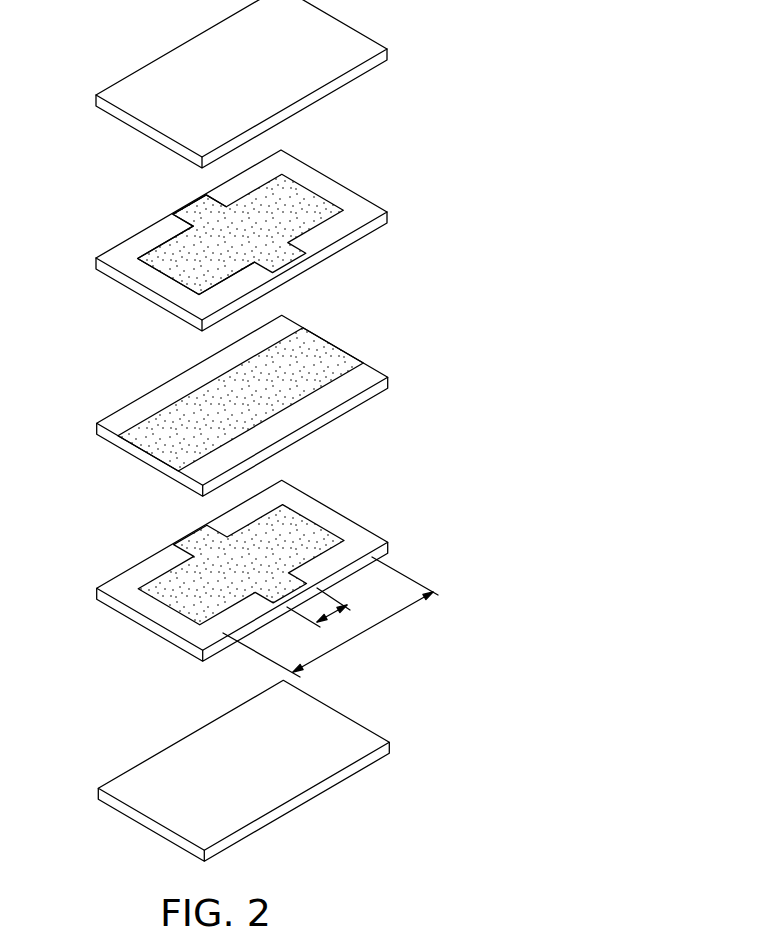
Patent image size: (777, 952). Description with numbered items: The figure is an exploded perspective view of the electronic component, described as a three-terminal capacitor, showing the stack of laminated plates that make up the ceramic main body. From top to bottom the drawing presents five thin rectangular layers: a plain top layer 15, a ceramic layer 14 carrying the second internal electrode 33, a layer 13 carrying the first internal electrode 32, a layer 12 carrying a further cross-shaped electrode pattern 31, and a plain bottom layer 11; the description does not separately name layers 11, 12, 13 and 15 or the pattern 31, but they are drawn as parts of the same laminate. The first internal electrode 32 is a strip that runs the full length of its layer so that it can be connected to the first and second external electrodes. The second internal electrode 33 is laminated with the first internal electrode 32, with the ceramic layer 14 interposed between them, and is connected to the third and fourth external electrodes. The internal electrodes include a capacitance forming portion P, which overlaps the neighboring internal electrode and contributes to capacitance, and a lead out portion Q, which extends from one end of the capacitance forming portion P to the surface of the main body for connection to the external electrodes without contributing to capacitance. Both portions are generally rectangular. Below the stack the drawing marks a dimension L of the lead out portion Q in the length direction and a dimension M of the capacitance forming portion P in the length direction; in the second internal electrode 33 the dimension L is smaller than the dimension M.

The first substrate layer 11 is at (132, 778).
The second substrate layer with cross-shaped electrode pattern 12 is at (132, 579).
The third substrate layer with strip electrode pattern 13 is at (130, 414).
The ceramic layer 14 is at (130, 253).
The top cover layer 15 is at (128, 87).
The cross-shaped electrode pattern on layer 12 31 is at (307, 535).
The first internal electrode 32 is at (323, 357).
The second internal electrode 33 is at (303, 208).
The capacitance forming portion P is at (182, 268).
The lead out portion Q is at (197, 213).
The dimension of the lead out portion in the length direction L is at (318, 612).
The dimension of the capacitance forming portion in the length direction M is at (330, 617).